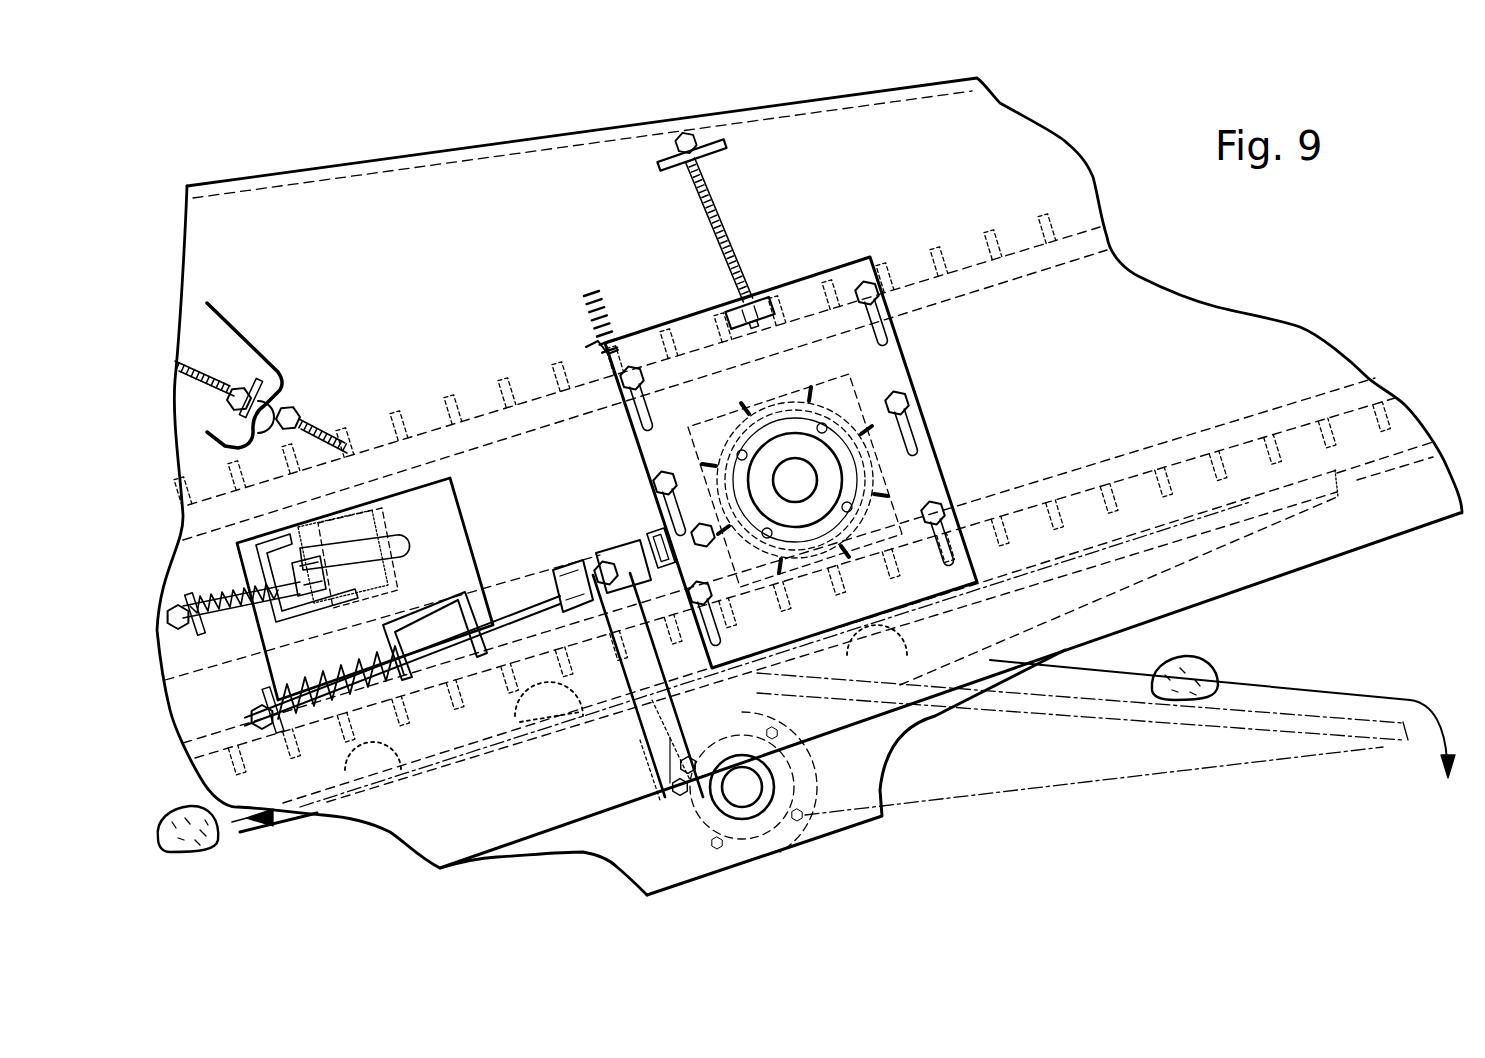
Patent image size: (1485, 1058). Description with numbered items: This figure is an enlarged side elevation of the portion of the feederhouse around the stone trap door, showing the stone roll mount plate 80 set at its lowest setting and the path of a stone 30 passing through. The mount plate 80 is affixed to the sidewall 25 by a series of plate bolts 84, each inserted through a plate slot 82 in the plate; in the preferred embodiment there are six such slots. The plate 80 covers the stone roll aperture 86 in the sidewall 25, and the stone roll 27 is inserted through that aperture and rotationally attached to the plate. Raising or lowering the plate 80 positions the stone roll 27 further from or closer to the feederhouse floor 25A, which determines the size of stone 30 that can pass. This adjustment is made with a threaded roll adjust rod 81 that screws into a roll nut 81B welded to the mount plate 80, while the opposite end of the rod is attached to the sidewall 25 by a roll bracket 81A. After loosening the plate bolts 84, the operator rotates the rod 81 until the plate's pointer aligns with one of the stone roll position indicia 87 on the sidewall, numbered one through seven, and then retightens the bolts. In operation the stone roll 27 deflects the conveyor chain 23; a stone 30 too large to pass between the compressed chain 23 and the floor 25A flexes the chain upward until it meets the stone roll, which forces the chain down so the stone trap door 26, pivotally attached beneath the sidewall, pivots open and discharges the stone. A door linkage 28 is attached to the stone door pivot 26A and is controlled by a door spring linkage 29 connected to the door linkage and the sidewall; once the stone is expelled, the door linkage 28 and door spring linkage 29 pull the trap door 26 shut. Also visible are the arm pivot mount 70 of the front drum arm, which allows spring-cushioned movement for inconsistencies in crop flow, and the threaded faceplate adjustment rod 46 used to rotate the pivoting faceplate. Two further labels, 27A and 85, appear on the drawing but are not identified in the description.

The conveyor chain 23 is at (1183, 448).
The sidewall 25 is at (343, 207).
The feederhouse floor 25A is at (1377, 467).
The stone trap door 26 is at (1047, 582).
The stone door pivot 26A is at (750, 805).
The stone roll 27 is at (875, 372).
The hub bore 27A is at (820, 470).
The door linkage 28 is at (650, 720).
The door spring linkage 29 is at (510, 608).
The stone 30 is at (192, 850).
The faceplate adjustment rod 46 is at (182, 362).
The arm pivot mount 70 is at (388, 478).
The stone roll mount plate 80 is at (905, 388).
The roll adjust rod 81 is at (730, 224).
The roll bracket 81A is at (722, 148).
The roll nut 81B is at (749, 306).
The plate slot 82 is at (912, 440).
The plate bolt 84 is at (912, 402).
The pointer 85 is at (612, 348).
The stone roll aperture 86 is at (818, 368).
The stone roll position indicia 87 is at (587, 297).